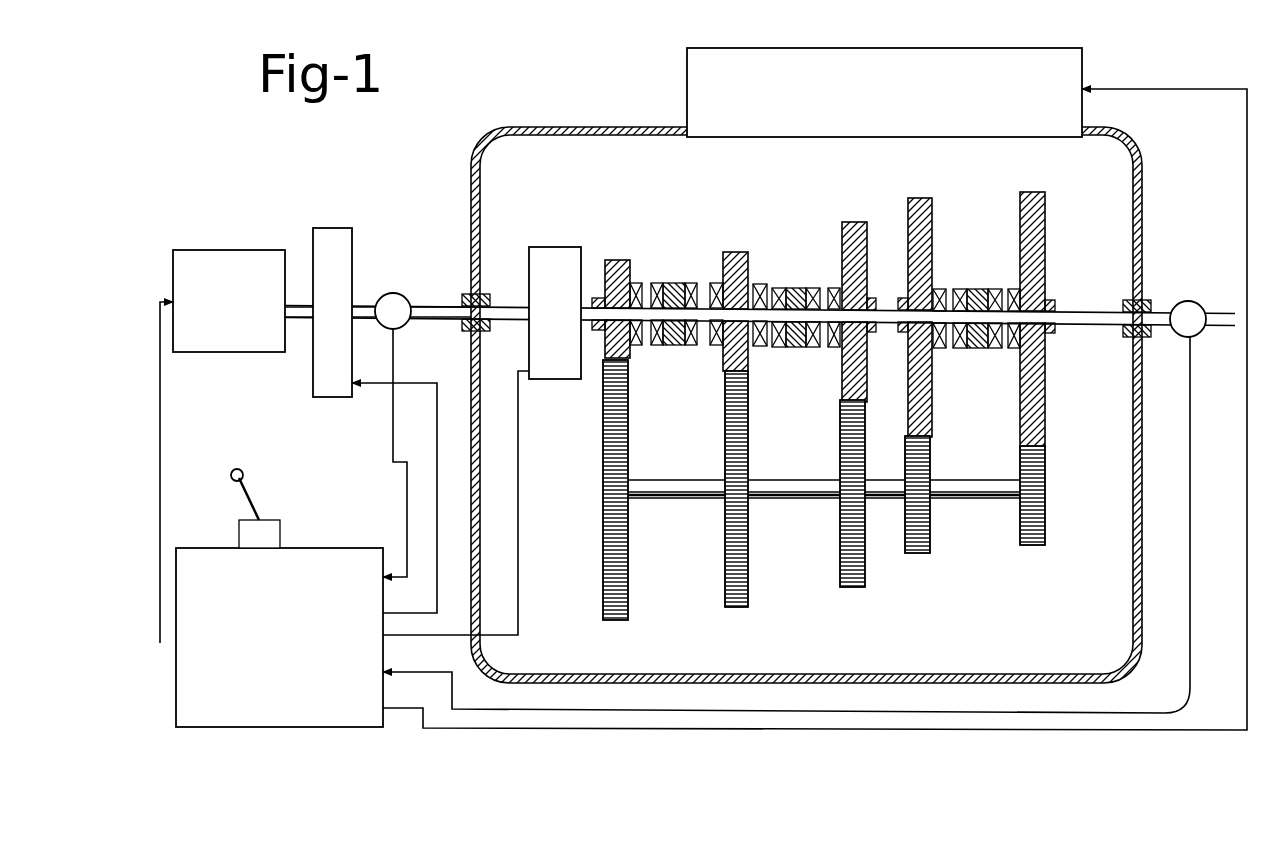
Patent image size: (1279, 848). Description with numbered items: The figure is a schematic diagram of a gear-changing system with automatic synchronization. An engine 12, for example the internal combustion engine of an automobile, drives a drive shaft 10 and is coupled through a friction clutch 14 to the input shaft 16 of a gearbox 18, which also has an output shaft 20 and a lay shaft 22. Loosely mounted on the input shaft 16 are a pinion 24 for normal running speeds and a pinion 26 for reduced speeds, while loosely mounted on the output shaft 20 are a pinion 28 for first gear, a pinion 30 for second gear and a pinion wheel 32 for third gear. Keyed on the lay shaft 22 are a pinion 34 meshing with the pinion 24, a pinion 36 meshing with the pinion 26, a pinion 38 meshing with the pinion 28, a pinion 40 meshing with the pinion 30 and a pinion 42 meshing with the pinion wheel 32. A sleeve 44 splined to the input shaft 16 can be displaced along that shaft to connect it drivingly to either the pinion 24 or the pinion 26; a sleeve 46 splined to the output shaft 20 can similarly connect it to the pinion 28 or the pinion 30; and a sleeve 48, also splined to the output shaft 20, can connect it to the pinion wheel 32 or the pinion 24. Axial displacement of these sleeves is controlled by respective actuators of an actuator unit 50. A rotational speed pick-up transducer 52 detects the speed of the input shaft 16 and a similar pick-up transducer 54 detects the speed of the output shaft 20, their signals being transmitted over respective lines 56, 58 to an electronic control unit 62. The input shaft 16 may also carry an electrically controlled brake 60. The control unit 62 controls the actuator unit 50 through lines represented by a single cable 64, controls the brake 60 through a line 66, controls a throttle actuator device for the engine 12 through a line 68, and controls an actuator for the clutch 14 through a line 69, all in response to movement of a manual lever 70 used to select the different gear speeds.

The drive shaft 10 is at (298, 318).
The engine 12 is at (224, 262).
The friction clutch 14 is at (327, 383).
The input shaft 16 is at (376, 300).
The gearbox 18 is at (515, 127).
The output shaft 20 is at (1072, 311).
The lay shaft 22 is at (968, 497).
The pinion 24 is at (735, 258).
The pinion 26 is at (617, 275).
The pinion 28 is at (1038, 224).
The pinion 30 is at (926, 215).
The pinion wheel 32 is at (853, 240).
The pinion 34 is at (735, 608).
The pinion 36 is at (613, 622).
The pinion 38 is at (1032, 546).
The pinion 40 is at (918, 554).
The pinion 42 is at (850, 588).
The sleeve 44 is at (668, 290).
The sleeve 46 is at (976, 292).
The sleeve 48 is at (795, 296).
The actuator unit 50 is at (1082, 65).
The rotational speed pick-up transducer 52 is at (398, 320).
The pick-up transducer 54 is at (1188, 312).
The line 56 is at (393, 434).
The line 58 is at (1190, 425).
The electrically controlled brake 60 is at (546, 257).
The electronic control unit 62 is at (382, 654).
The cable 64 is at (795, 728).
The line 66 is at (520, 520).
The line 68 is at (160, 392).
The line 69 is at (443, 458).
The manual lever 70 is at (246, 487).